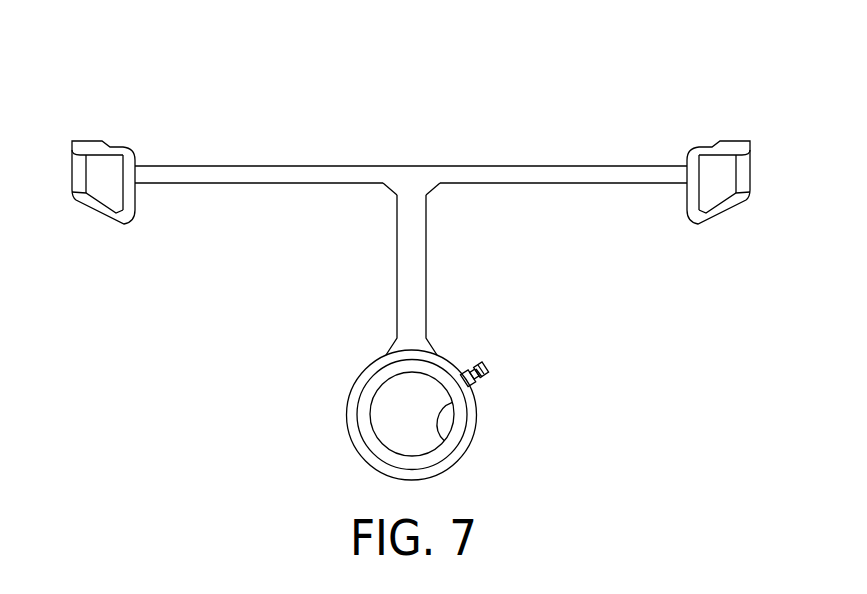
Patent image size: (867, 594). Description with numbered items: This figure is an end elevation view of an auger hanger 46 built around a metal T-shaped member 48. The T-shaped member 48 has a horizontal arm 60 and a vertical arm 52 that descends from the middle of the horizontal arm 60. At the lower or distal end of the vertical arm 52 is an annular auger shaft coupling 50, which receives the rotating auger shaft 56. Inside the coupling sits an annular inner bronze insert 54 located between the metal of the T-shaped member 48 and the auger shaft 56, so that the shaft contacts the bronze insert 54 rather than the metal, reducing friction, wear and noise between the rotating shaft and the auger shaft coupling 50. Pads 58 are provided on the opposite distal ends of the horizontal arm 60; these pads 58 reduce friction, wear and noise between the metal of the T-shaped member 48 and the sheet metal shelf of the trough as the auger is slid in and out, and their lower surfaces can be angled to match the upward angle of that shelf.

The auger hanger 46 is at (505, 108).
The T-shaped member 48 is at (380, 203).
The auger shaft coupling 50 is at (322, 413).
The vertical arm 52 is at (427, 263).
The bronze insert 54 is at (445, 442).
The auger shaft 56 is at (412, 415).
The pads 58 is at (97, 213).
The horizontal arm 60 is at (302, 166).